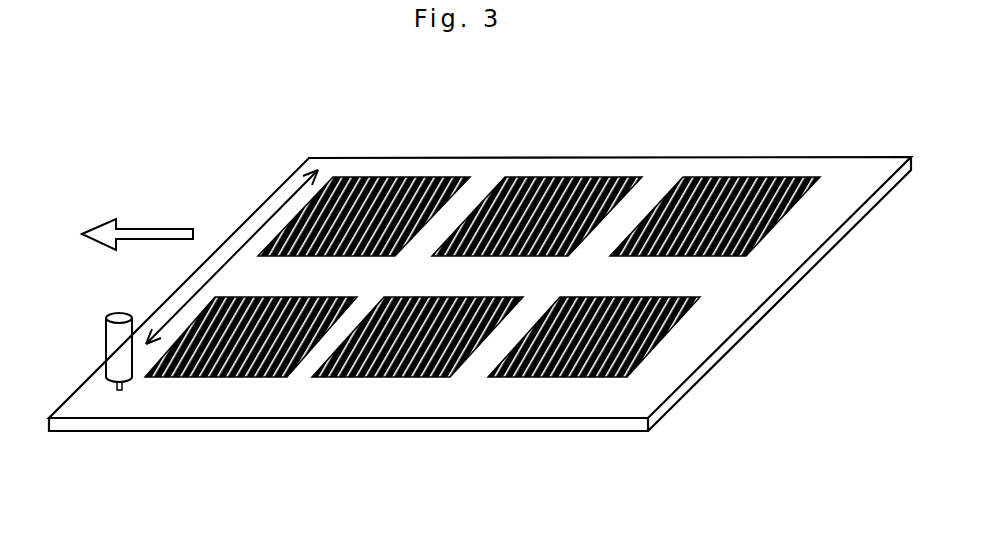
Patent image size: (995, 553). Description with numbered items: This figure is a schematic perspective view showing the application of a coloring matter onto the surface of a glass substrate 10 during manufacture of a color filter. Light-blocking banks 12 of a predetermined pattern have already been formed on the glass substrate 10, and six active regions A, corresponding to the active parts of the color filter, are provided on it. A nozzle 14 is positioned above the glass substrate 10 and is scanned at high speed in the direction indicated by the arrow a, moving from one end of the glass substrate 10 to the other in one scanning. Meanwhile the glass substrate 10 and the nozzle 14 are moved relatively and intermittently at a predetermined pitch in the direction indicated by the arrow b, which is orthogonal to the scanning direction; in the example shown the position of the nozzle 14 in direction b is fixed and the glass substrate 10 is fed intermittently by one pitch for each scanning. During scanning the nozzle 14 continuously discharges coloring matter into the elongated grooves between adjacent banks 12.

The glass substrate 10 is at (354, 423).
The light-blocking banks 12 is at (577, 374).
The nozzle 14 is at (122, 342).
The active region A is at (670, 337).
The scanning direction arrow a is at (237, 252).
The intermittent feed direction arrow b is at (148, 233).